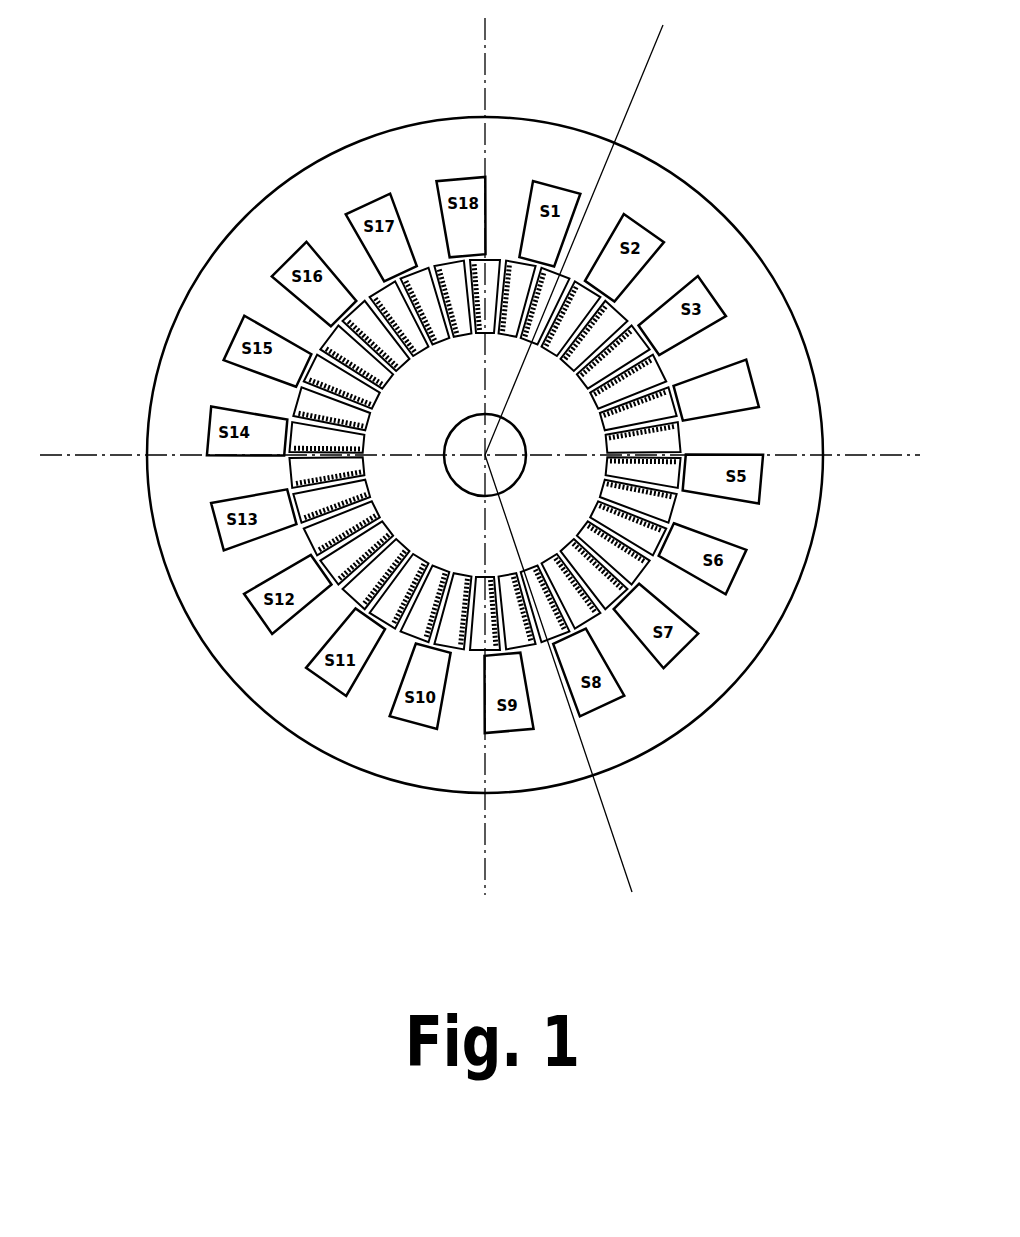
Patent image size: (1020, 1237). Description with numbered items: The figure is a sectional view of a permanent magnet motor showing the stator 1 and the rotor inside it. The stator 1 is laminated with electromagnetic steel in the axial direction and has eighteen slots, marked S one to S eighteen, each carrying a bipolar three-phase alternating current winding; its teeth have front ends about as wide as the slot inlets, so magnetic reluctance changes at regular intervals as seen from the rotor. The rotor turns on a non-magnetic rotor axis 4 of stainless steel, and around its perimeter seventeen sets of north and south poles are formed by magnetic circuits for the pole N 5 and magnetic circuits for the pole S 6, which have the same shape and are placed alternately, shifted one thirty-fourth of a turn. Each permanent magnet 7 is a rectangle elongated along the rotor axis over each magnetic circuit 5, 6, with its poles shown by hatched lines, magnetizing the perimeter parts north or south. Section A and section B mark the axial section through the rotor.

The stator 1 is at (514, 140).
The non-magnetic rotor axis 4 is at (508, 470).
The magnetic circuit for the pole N 5 is at (554, 390).
The magnetic circuit for the pole S 6 is at (637, 343).
The permanent magnet 7 is at (683, 420).
The section A is at (660, 53).
The section B is at (633, 849).